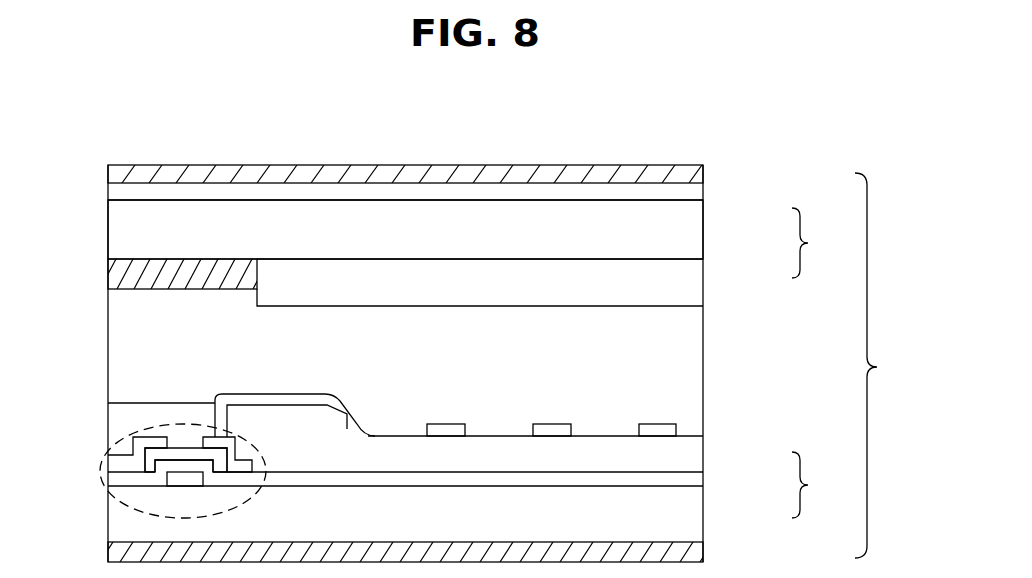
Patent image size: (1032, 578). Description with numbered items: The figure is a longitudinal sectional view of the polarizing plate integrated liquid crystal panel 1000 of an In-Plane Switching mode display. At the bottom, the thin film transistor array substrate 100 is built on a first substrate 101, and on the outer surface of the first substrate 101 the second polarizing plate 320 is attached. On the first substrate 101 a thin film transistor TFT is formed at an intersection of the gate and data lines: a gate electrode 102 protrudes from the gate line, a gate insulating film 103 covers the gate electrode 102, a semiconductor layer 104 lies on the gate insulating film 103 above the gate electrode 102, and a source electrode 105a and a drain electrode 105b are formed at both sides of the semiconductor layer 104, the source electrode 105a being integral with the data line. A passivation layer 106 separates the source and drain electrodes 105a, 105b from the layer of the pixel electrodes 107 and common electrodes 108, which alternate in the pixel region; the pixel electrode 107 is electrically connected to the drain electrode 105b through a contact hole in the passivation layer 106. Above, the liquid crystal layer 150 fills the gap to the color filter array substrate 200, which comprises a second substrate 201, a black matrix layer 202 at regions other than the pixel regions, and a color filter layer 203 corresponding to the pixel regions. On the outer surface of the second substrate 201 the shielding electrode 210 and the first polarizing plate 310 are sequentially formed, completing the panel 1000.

The polarizing plate integrated liquid crystal panel 1000 is at (892, 365).
The thin film transistor array substrate 100 is at (821, 485).
The first substrate 101 is at (698, 514).
The gate electrode 102 is at (185, 478).
The gate insulating film 103 is at (698, 480).
The semiconductor layer 104 is at (187, 452).
The source electrode 105a is at (133, 457).
The drain electrode 105b is at (235, 441).
The passivation layer 106 is at (698, 450).
The pixel electrode 107 is at (280, 395).
The common electrode 108 is at (448, 423).
The liquid crystal layer 150 is at (698, 331).
The color filter array substrate 200 is at (821, 243).
The second substrate 201 is at (698, 234).
The black matrix layer 202 is at (108, 277).
The color filter layer 203 is at (698, 284).
The shielding electrode 210 is at (698, 193).
The first polarizing plate 310 is at (698, 176).
The second polarizing plate 320 is at (698, 551).
The thin film transistor TFT is at (248, 497).